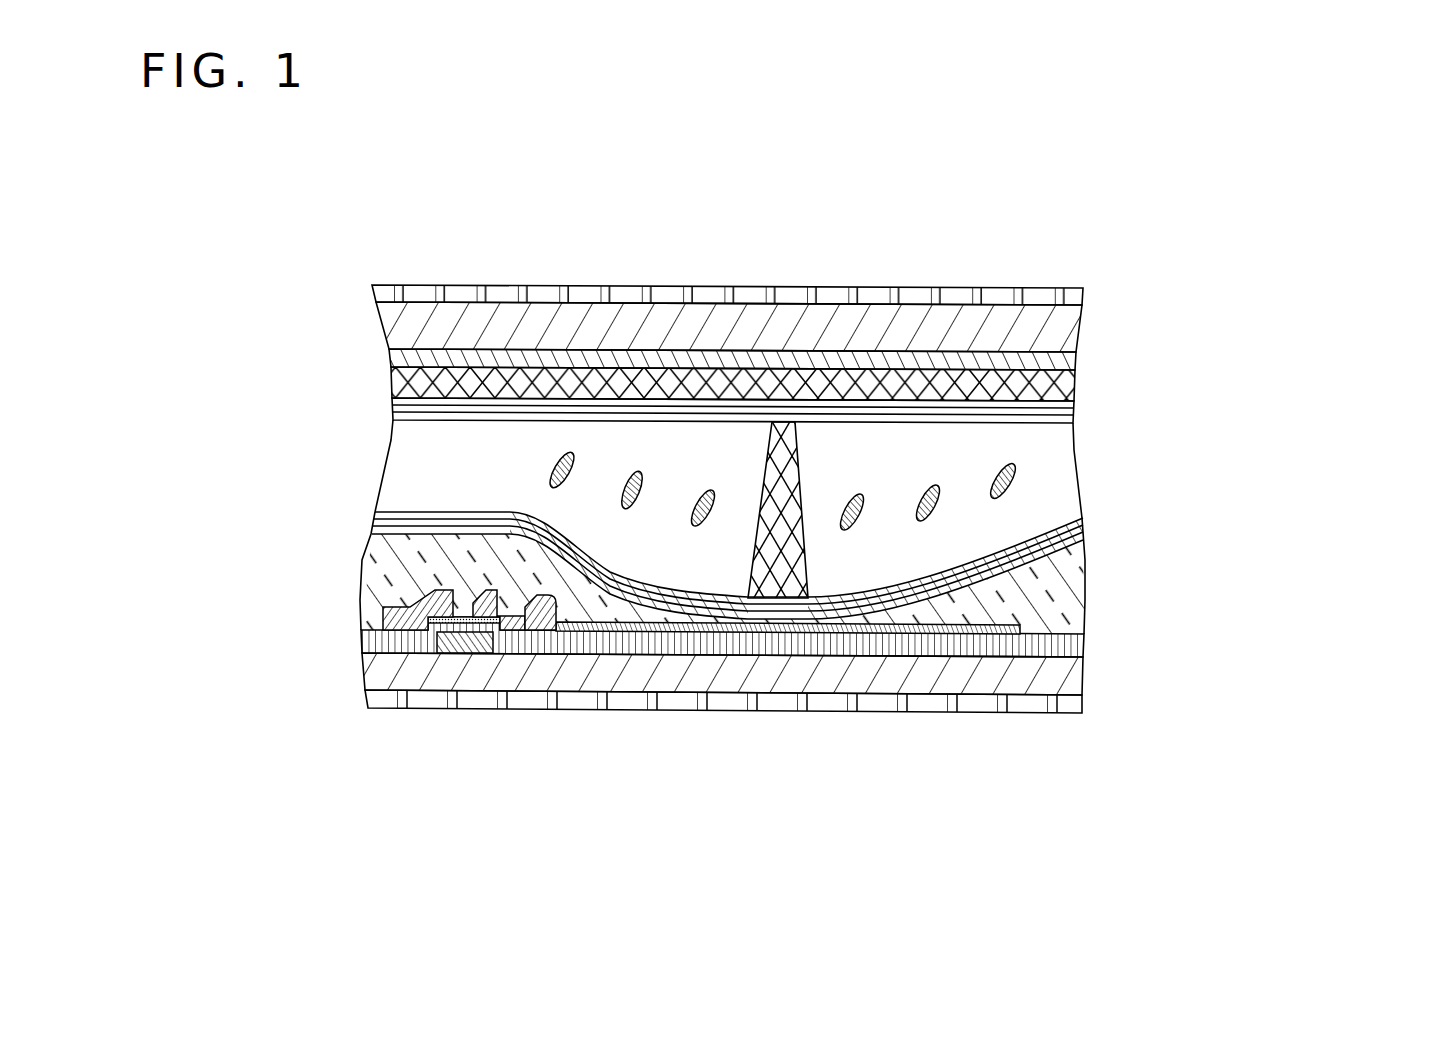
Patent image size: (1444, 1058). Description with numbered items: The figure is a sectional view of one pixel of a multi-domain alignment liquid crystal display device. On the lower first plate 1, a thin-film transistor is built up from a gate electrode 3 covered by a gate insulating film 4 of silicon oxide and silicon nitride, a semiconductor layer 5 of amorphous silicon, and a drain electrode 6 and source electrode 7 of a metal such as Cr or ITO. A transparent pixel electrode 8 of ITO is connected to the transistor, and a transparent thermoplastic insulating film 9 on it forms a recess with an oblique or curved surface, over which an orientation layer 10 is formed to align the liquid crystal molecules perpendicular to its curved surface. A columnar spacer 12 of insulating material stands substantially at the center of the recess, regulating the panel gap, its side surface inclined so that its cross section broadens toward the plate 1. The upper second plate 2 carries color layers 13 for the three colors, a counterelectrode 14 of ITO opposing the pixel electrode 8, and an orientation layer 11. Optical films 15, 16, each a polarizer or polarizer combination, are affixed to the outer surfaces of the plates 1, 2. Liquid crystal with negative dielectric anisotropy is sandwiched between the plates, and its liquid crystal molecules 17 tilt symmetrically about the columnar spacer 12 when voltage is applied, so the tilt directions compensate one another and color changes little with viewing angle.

The first plate 1 is at (1085, 672).
The second plate 2 is at (1078, 327).
The gate electrode 3 is at (497, 652).
The gate insulating film 4 is at (1085, 637).
The semiconductor layer 5 is at (445, 625).
The drain electrode 6 is at (386, 600).
The source electrode 7 is at (553, 598).
The pixel electrode 8 is at (700, 622).
The insulating film 9 is at (1084, 565).
The orientation layer 10 is at (1083, 520).
The orientation layer 11 is at (1077, 408).
The columnar spacer 12 is at (805, 560).
The color layers 13 is at (1078, 360).
The counterelectrode 14 is at (1077, 388).
The optical film 15 is at (1074, 707).
The optical film 16 is at (1083, 287).
The liquid crystal molecules 17 is at (1022, 478).